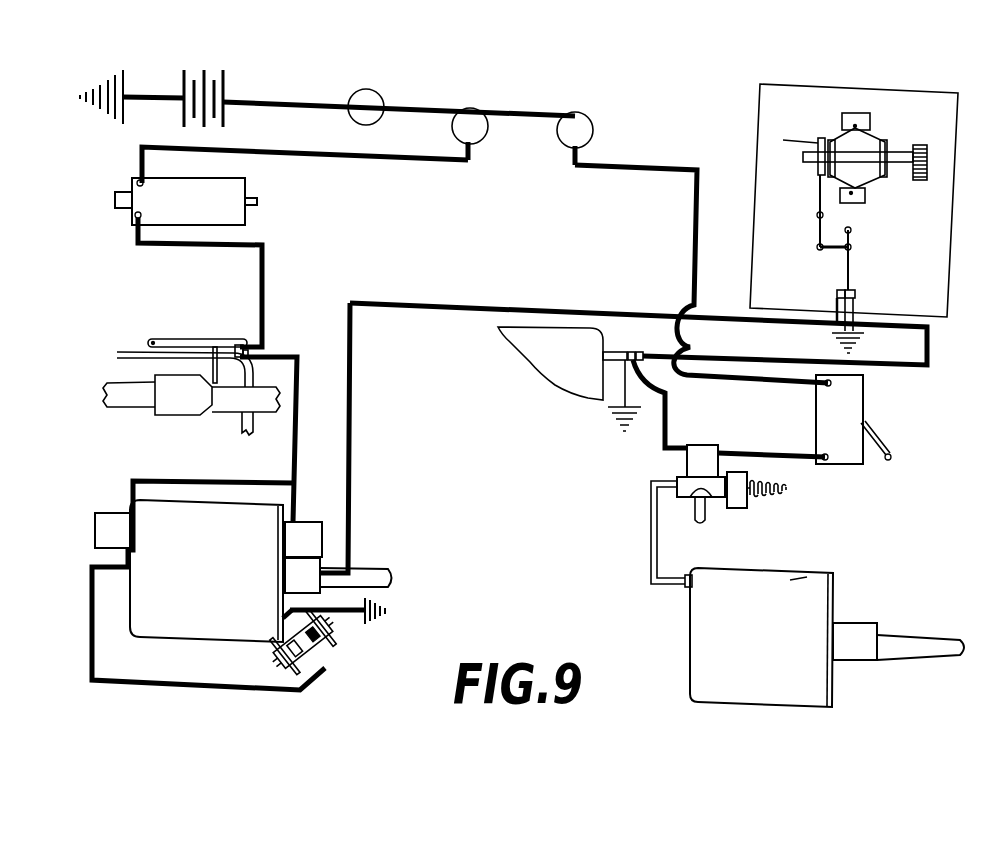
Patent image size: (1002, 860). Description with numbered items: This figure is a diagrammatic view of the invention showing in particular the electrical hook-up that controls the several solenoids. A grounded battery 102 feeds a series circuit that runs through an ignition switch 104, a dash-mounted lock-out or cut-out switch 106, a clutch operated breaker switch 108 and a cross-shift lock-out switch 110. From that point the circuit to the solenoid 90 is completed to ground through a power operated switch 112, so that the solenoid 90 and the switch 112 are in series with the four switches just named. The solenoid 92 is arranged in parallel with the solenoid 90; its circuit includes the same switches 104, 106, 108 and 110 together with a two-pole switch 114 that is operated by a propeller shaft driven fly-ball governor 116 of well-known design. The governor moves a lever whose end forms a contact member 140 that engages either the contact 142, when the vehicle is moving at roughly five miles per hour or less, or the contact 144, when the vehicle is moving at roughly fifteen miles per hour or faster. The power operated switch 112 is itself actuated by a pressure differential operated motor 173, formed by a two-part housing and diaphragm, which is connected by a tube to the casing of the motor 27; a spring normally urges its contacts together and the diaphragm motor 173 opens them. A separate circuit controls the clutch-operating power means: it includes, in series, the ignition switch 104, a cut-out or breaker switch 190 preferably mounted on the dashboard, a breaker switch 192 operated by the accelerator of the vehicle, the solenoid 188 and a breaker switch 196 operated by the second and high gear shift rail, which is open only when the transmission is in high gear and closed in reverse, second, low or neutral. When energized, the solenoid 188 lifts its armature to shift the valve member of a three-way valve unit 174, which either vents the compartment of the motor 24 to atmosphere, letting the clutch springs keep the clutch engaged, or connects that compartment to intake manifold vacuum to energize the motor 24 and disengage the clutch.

The grounded battery 102 is at (204, 70).
The ignition switch 104 is at (365, 95).
The dash-mounted lock-out or cut-out switch 106 is at (470, 110).
The cut-out or breaker switch 190 is at (578, 130).
The clutch operated breaker switch 108 is at (232, 193).
The cross-shift lock-out switch 110 is at (225, 347).
The fly-ball governor 116 is at (927, 105).
The contact member 140 is at (845, 288).
The two-pole switch 114 is at (920, 276).
The contact 144 is at (837, 293).
The contact 142 is at (857, 293).
The breaker switch 196 is at (610, 379).
The breaker switch 192 is at (827, 427).
The solenoid 188 is at (697, 462).
The three-way valve unit 174 is at (747, 503).
The motor 24 is at (737, 585).
The solenoid 90 is at (107, 523).
The solenoid 92 is at (308, 537).
The motor 27 is at (195, 623).
The power operated switch 112 is at (320, 650).
The pressure differential operated motor 173 is at (297, 663).